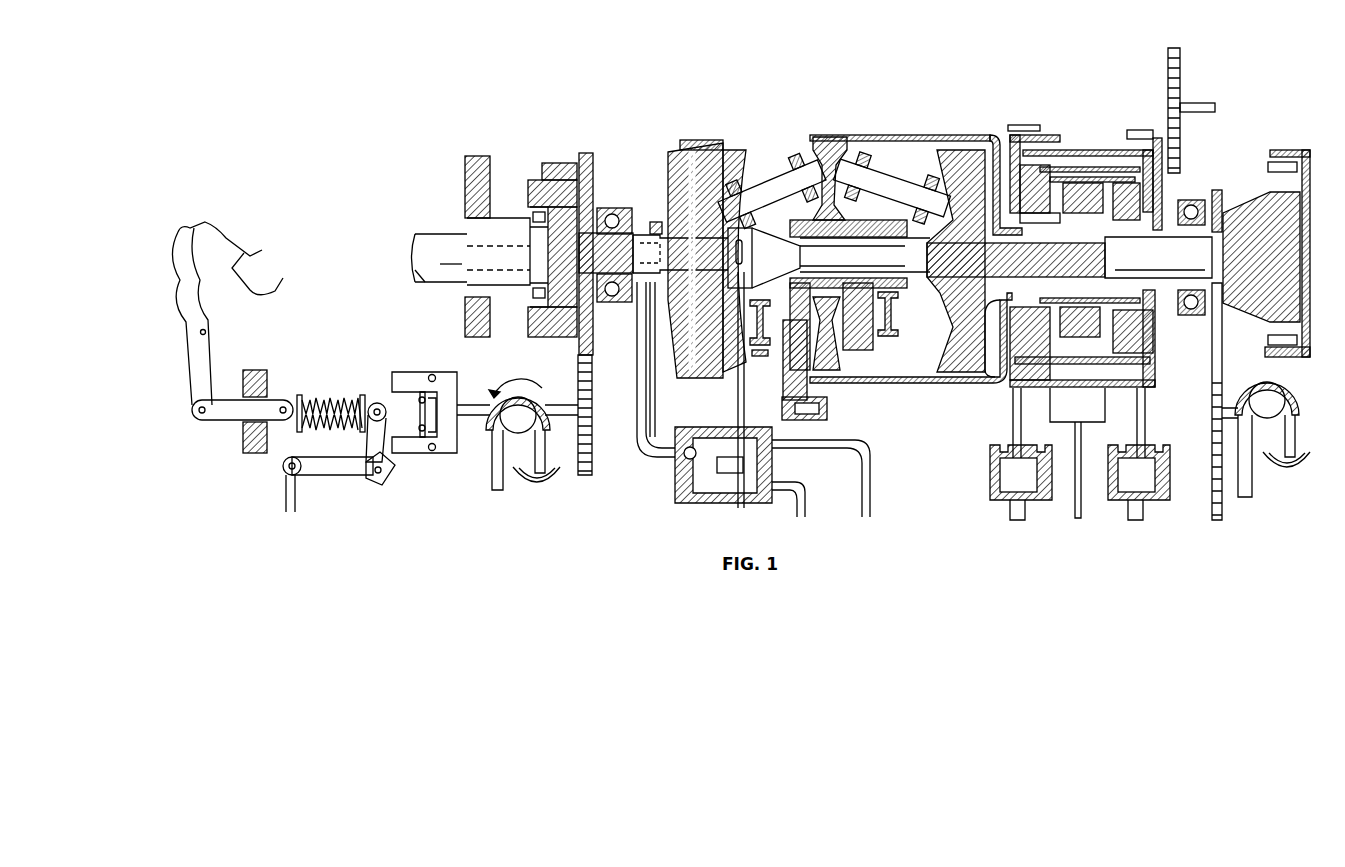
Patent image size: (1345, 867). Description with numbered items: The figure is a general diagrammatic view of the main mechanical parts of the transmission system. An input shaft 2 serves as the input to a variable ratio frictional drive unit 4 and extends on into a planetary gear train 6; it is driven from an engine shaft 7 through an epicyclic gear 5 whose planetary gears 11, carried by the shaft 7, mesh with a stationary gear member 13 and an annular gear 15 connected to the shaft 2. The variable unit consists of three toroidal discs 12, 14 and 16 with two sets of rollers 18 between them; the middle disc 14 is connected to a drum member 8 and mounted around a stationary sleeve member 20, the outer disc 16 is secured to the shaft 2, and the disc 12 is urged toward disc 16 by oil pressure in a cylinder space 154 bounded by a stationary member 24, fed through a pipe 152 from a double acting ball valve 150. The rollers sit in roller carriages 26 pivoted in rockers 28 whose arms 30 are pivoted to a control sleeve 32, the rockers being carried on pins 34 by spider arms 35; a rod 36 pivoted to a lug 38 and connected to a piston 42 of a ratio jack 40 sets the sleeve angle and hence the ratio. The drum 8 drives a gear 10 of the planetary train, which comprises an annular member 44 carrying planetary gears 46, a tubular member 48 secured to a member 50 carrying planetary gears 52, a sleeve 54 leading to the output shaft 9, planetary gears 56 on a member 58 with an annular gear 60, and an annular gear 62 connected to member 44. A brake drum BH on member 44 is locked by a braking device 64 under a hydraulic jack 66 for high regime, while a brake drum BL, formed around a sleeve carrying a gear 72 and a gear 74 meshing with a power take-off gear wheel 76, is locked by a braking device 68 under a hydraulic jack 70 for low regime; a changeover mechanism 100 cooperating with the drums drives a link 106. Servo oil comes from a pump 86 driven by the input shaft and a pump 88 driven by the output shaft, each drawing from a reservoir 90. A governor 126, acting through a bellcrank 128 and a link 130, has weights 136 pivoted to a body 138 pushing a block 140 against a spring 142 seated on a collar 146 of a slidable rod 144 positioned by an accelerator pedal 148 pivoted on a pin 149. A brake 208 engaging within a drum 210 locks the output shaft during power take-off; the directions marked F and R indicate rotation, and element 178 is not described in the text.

The input shaft 2 is at (655, 236).
The variable ratio frictional drive unit 4 is at (843, 133).
The epicyclic gear 5 is at (560, 138).
The planetary gear train 6 is at (1083, 132).
The engine shaft 7 is at (436, 236).
The drum member 8 is at (895, 385).
The output shaft 9 is at (1248, 300).
The gear 10 is at (1020, 229).
The planetary gears 11 is at (530, 190).
The toroidal disc 12 is at (722, 162).
The stationary gear member 13 is at (545, 236).
The middle toroidal disc 14 is at (812, 152).
The annular gear 15 is at (547, 167).
The outer toroidal disc 16 is at (946, 162).
The rollers 18 is at (766, 170).
The stationary sleeve member 20 is at (842, 282).
The stationary member 24 is at (692, 372).
The roller carriages 26 is at (736, 190).
The rockers 28 is at (768, 357).
The arms 30 is at (750, 312).
The control sleeve 32 is at (780, 264).
The pins 34 is at (892, 338).
The spider arms 35 is at (784, 392).
The rod 36 is at (736, 413).
The lug 38 is at (735, 257).
The ratio jack 40 is at (668, 481).
The piston 42 is at (745, 466).
The annular member 44 is at (1012, 345).
The planetary gears 46 is at (1024, 167).
The tubular member 48 is at (1125, 156).
The member 50 is at (1150, 330).
The planetary gears 52 is at (1152, 212).
The sleeve 54 is at (1158, 257).
The planetary gears 56 is at (1029, 259).
The member 58 is at (1070, 310).
The annular gear 60 is at (1152, 366).
The annular gear 62 is at (1076, 183).
The braking device 64 is at (1012, 433).
The hydraulic jack 66 is at (963, 482).
The braking device 68 is at (1146, 433).
The hydraulic jack 70 is at (1168, 482).
The gear 72 is at (1218, 195).
The gear 74 is at (1163, 178).
The gear wheel 76 is at (1181, 74).
The pump 86 is at (508, 420).
The pump 88 is at (1282, 403).
The reservoir 90 is at (543, 478).
The changeover mechanism 100 is at (1063, 416).
The link 106 is at (1076, 500).
The governor 126 is at (427, 366).
The bellcrank 128 is at (335, 475).
The link 130 is at (285, 496).
The weights 136 is at (400, 375).
The body 138 is at (446, 378).
The block 140 is at (370, 404).
The spring 142 is at (328, 394).
The axially slidable rod 144 is at (220, 418).
The collar 146 is at (298, 396).
The accelerator pedal 148 is at (179, 228).
The pin 149 is at (207, 331).
The double acting ball valve 150 is at (660, 452).
The pipe 152 is at (636, 340).
The cylinder space 154 is at (696, 141).
The valve stem 178 is at (737, 510).
The brake 208 is at (1280, 173).
The drum 210 is at (1282, 150).
The brake drum BH is at (994, 418).
The brake drum BL is at (1150, 418).
The forward rotation arrow F is at (1260, 370).
The reverse rotation arrow R is at (1280, 372).